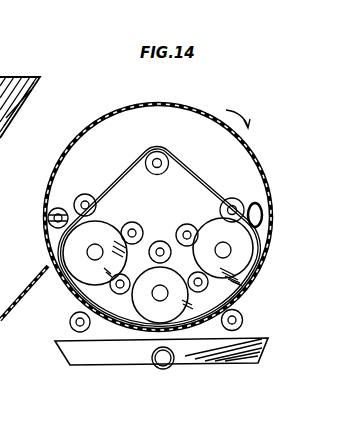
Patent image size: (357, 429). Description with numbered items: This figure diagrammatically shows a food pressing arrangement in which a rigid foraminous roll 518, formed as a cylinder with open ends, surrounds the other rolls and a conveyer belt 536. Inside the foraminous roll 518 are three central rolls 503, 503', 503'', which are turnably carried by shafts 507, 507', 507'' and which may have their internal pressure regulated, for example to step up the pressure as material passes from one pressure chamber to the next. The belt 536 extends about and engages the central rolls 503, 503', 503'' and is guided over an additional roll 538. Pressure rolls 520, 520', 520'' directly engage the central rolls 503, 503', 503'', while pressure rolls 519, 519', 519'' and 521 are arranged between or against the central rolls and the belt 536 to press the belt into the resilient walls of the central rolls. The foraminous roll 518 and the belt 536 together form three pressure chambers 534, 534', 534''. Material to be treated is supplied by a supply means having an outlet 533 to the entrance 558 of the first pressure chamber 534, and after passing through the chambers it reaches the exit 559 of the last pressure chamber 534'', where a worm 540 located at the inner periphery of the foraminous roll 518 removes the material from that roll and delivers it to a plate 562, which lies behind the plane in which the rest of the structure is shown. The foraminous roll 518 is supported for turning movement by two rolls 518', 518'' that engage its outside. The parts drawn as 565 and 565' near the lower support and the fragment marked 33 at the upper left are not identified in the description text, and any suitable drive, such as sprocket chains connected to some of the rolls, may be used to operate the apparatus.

The adjacent figure part 33 is at (5, 76).
The foraminous roll 518 is at (158, 209).
The supporting roll 518' is at (256, 321).
The supporting roll 518'' is at (57, 327).
The belt 536 is at (138, 165).
The additional roll 538 is at (158, 150).
The shaft 507 is at (223, 248).
The shaft 507' is at (160, 295).
The shaft 507'' is at (95, 253).
The pressure roll 519 is at (239, 290).
The pressure roll 519' is at (109, 280).
The pressure roll 519'' is at (86, 194).
The pressure roll 520 is at (191, 222).
The pressure roll 520' is at (163, 237).
The pressure roll 520'' is at (132, 218).
The pressure roll 521 is at (232, 198).
The outlet 533 is at (262, 208).
The pressure chamber 534 is at (264, 276).
The pressure chamber 534' is at (211, 375).
The pressure chamber 534'' is at (33, 293).
The worm 540 is at (48, 216).
The entrance 558 is at (263, 236).
The exit 559 is at (48, 240).
The central roll 503 is at (288, 257).
The central roll 503' is at (161, 351).
The central roll 503'' is at (34, 253).
The plate 562 is at (14, 348).
The wedge plate 565 is at (252, 350).
The roller 565' is at (150, 369).